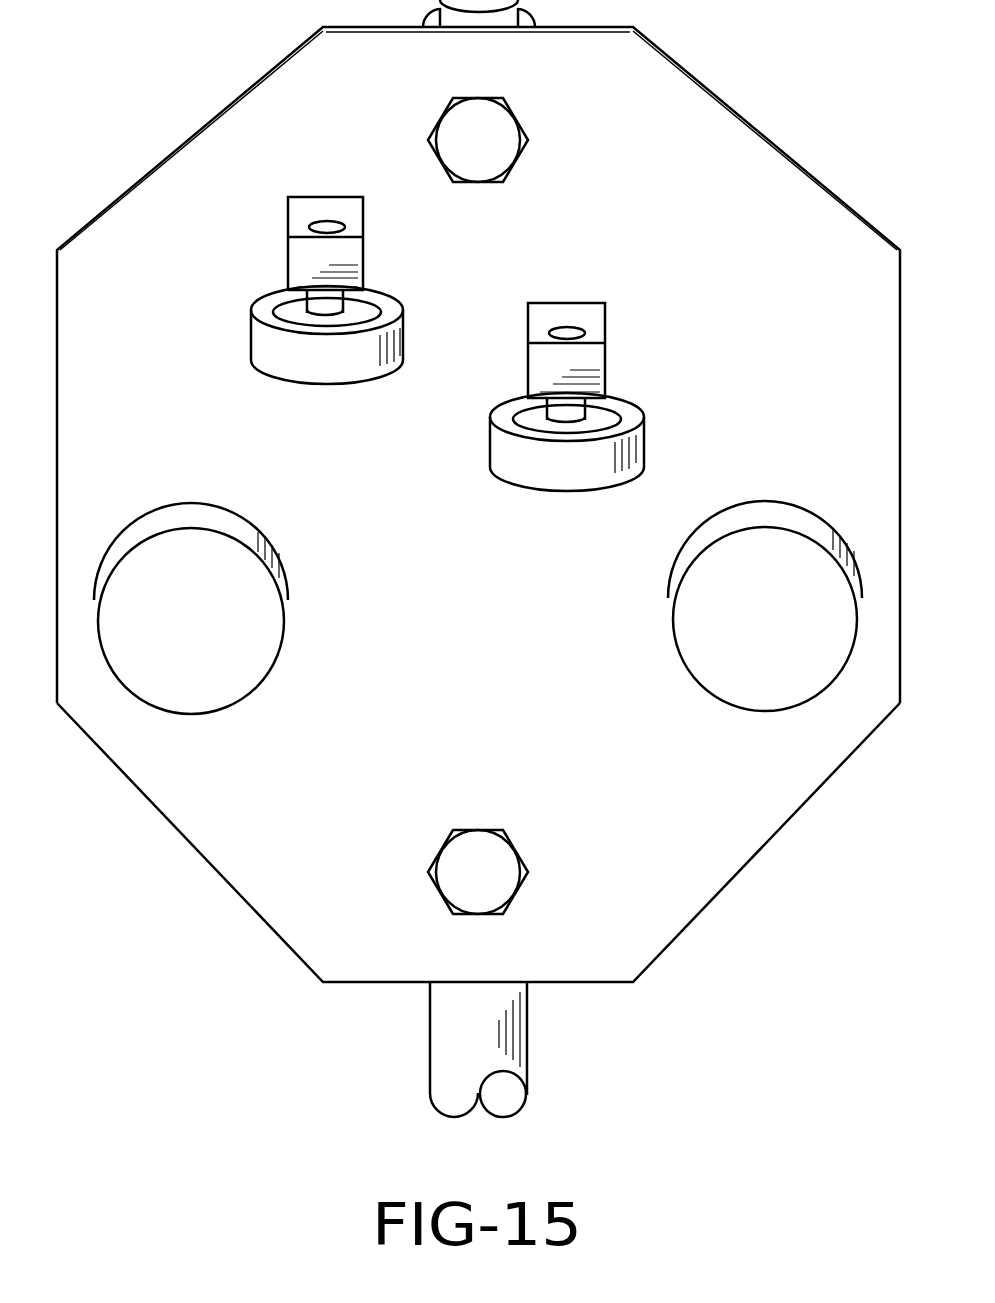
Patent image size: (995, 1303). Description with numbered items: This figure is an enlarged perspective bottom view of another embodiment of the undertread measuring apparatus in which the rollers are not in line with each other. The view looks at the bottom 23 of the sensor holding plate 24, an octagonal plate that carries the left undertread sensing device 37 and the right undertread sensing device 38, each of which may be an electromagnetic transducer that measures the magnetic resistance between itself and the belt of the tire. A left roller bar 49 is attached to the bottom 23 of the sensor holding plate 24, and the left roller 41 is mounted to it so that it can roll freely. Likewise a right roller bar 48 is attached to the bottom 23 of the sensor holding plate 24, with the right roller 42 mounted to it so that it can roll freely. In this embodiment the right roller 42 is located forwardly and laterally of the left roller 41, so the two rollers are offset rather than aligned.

The bottom of the sensor holding plate 23 is at (630, 128).
The sensor holding plate 24 is at (630, 870).
The left undertread sensing device 37 is at (241, 660).
The right undertread sensing device 38 is at (727, 670).
The left roller 41 is at (262, 342).
The right roller 42 is at (598, 455).
The right roller bar 48 is at (585, 320).
The left roller bar 49 is at (308, 213).